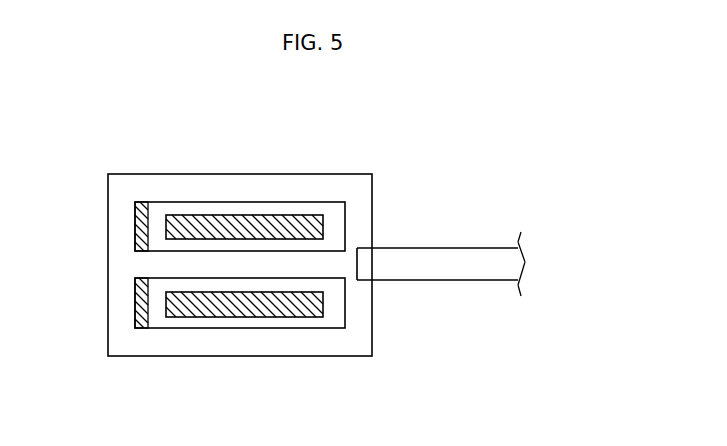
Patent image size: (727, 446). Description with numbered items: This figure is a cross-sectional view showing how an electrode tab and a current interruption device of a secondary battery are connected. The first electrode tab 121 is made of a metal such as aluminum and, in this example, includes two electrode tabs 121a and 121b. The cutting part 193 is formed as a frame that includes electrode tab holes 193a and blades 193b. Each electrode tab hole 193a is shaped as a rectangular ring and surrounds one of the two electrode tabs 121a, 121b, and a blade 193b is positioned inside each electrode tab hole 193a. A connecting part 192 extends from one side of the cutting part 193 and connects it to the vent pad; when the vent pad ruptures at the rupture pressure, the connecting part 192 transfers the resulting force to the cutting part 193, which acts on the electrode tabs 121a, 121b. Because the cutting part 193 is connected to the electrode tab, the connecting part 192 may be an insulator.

The cutting part 193 is at (388, 165).
The electrode tab hole 193a is at (345, 203).
The blade 193b is at (146, 323).
The first electrode tab 121 is at (230, 266).
The electrode tab 121a is at (253, 216).
The electrode tab 121b is at (268, 317).
The connecting part 192 is at (445, 280).